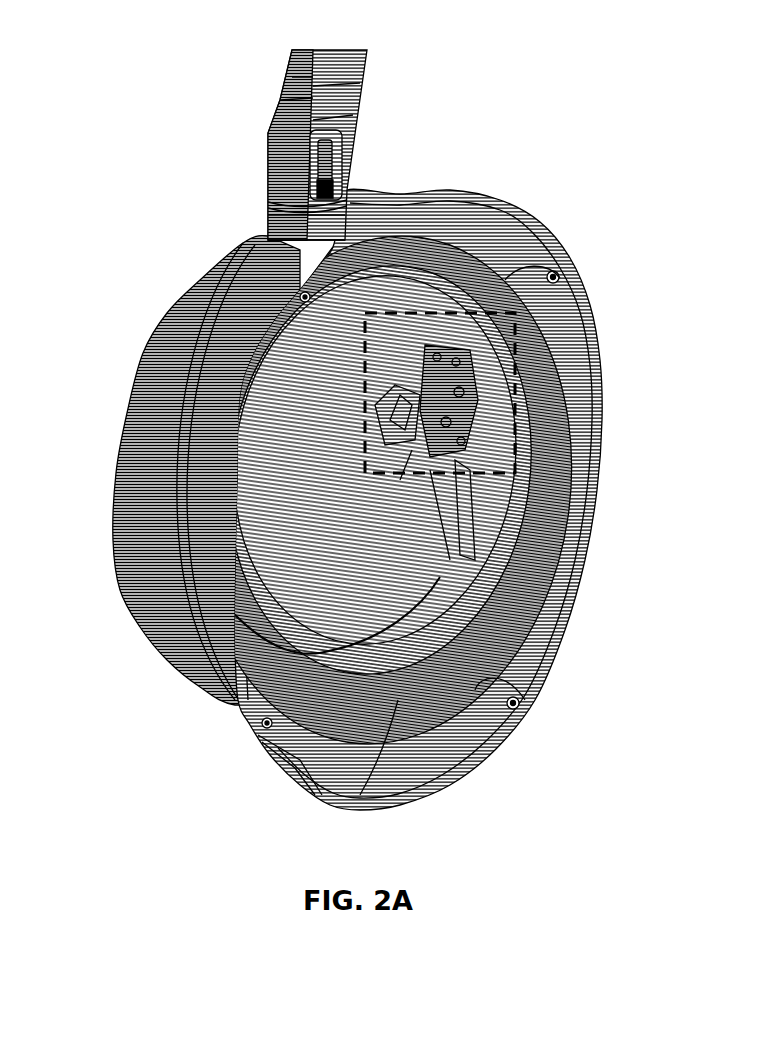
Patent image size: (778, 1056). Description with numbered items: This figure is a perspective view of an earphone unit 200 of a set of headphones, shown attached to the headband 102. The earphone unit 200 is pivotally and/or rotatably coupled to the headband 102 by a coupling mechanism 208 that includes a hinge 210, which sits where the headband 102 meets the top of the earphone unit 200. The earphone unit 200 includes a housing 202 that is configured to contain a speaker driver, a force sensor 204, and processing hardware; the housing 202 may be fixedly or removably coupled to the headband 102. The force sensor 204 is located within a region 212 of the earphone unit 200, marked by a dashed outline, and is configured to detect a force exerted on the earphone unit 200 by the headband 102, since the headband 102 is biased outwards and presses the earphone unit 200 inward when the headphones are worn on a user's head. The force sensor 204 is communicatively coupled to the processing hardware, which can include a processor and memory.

The headband 102 is at (281, 126).
The earphone unit 200 is at (347, 495).
The housing 202 is at (137, 522).
The force sensor 204 is at (377, 413).
The coupling mechanism 208 is at (283, 218).
The hinge 210 is at (333, 196).
The region 212 is at (515, 473).